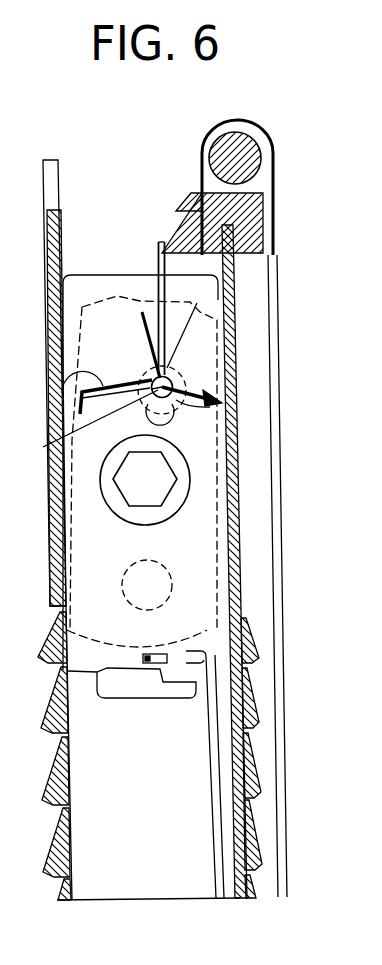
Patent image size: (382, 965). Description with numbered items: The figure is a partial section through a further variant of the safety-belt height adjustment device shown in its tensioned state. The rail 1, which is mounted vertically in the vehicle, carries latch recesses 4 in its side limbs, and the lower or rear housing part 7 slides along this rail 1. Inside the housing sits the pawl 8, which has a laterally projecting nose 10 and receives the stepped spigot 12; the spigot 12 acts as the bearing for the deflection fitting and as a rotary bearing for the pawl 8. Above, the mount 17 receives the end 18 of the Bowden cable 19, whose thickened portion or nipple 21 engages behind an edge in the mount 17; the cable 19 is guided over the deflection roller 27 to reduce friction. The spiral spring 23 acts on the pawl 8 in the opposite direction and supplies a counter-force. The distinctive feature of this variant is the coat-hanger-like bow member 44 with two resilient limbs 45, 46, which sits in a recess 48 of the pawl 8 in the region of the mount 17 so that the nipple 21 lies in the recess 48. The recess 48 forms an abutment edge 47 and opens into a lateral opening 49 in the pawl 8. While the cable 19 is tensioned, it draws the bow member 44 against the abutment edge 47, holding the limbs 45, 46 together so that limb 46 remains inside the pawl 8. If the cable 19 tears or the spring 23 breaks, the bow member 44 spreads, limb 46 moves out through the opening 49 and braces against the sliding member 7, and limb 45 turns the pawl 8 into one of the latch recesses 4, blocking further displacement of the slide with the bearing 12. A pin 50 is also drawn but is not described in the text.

The rail 1 is at (44, 178).
The latch recesses 4 is at (243, 722).
The lower or rear part of the housing 7 is at (67, 290).
The pawl 8 is at (193, 550).
The laterally projecting nose 10 is at (213, 624).
The stepped spigot 12 is at (127, 480).
The mount 17 is at (142, 312).
The end of the Bowden cable 18 is at (163, 241).
The Bowden cable 19 is at (274, 260).
The thickened portion 21 is at (43, 447).
The spiral spring 23 is at (216, 850).
The deflection roller 27 is at (247, 157).
The bow member 44 is at (238, 367).
The resilient limb 45 is at (80, 395).
The resilient limb 46 is at (240, 383).
The abutment edge 47 is at (64, 385).
The recess 48 is at (173, 423).
The lateral opening 49 is at (210, 407).
The pin 50 is at (166, 370).